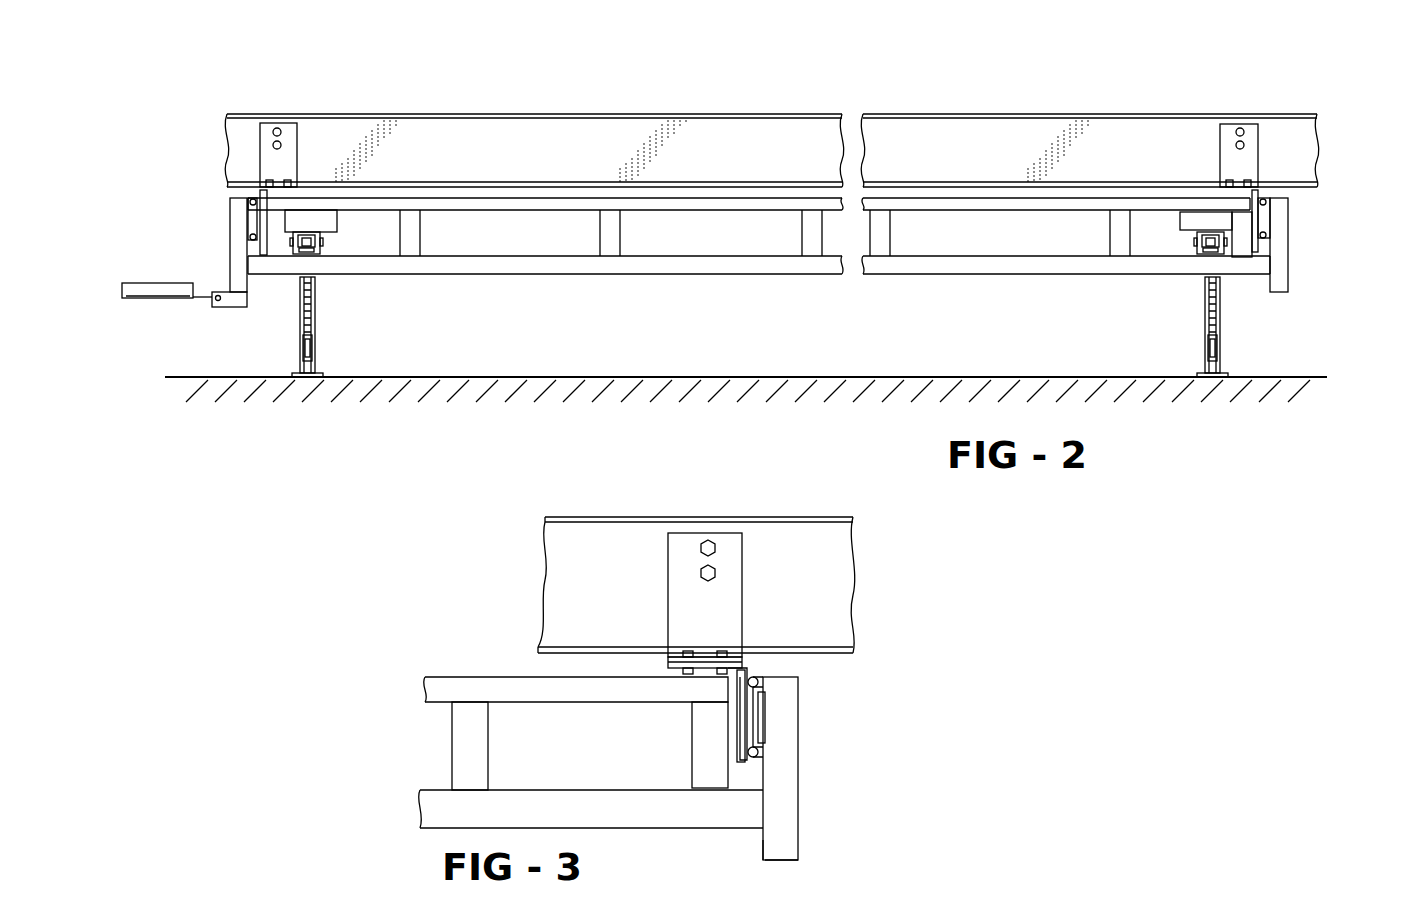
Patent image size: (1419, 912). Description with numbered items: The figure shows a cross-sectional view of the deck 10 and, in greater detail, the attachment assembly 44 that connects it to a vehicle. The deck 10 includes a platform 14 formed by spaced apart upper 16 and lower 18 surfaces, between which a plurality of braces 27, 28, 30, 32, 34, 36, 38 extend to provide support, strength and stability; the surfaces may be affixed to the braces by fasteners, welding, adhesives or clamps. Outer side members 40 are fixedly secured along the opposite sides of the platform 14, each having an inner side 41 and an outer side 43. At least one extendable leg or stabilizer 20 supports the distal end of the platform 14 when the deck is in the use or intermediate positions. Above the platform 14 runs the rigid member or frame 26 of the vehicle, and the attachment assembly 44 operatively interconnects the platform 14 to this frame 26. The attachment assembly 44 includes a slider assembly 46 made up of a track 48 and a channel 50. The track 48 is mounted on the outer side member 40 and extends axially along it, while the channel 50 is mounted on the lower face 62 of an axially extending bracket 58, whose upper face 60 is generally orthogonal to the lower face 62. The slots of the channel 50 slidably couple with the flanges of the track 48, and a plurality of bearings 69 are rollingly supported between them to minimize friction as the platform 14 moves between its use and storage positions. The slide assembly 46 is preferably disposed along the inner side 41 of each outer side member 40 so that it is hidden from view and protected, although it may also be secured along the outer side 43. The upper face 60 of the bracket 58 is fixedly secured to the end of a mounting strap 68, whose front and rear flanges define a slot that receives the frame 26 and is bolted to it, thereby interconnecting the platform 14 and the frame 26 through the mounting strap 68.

In FIG. 2, the deck 10 is at (1342, 104).
In FIG. 2, the platform 14 is at (1332, 222).
In FIG. 2, the upper surface 16 is at (437, 198).
In FIG. 3, the upper surface 16 is at (497, 677).
In FIG. 2, the lower surface 18 is at (375, 278).
In FIG. 3, the lower surface 18 is at (625, 830).
In FIG. 2, the stabilizer 20 is at (310, 311).
In FIG. 2, the frame 26 is at (257, 114).
In FIG. 3, the frame 26 is at (812, 516).
In FIG. 2, the brace 27 is at (277, 245).
In FIG. 2, the brace 28 is at (413, 233).
In FIG. 2, the brace 30 is at (612, 233).
In FIG. 2, the brace 32 is at (806, 233).
In FIG. 2, the brace 34 is at (888, 235).
In FIG. 2, the brace 36 is at (1112, 233).
In FIG. 3, the brace 36 is at (455, 758).
In FIG. 2, the brace 38 is at (1240, 248).
In FIG. 3, the brace 38 is at (698, 763).
In FIG. 2, the outer side member 40 is at (237, 210).
In FIG. 3, the outer side member 40 is at (794, 835).
In FIG. 3, the inner side 41 is at (763, 850).
In FIG. 3, the outer side 43 is at (798, 858).
In FIG. 3, the attachment assembly 44 is at (466, 578).
In FIG. 3, the slider assembly 46 is at (768, 665).
In FIG. 3, the track 48 is at (766, 733).
In FIG. 3, the channel 50 is at (750, 756).
In FIG. 3, the bracket 58 is at (745, 670).
In FIG. 3, the upper face 60 is at (668, 664).
In FIG. 3, the lower face 62 is at (740, 750).
In FIG. 3, the mounting strap 68 is at (676, 553).
In FIG. 3, the bearings 69 is at (757, 682).